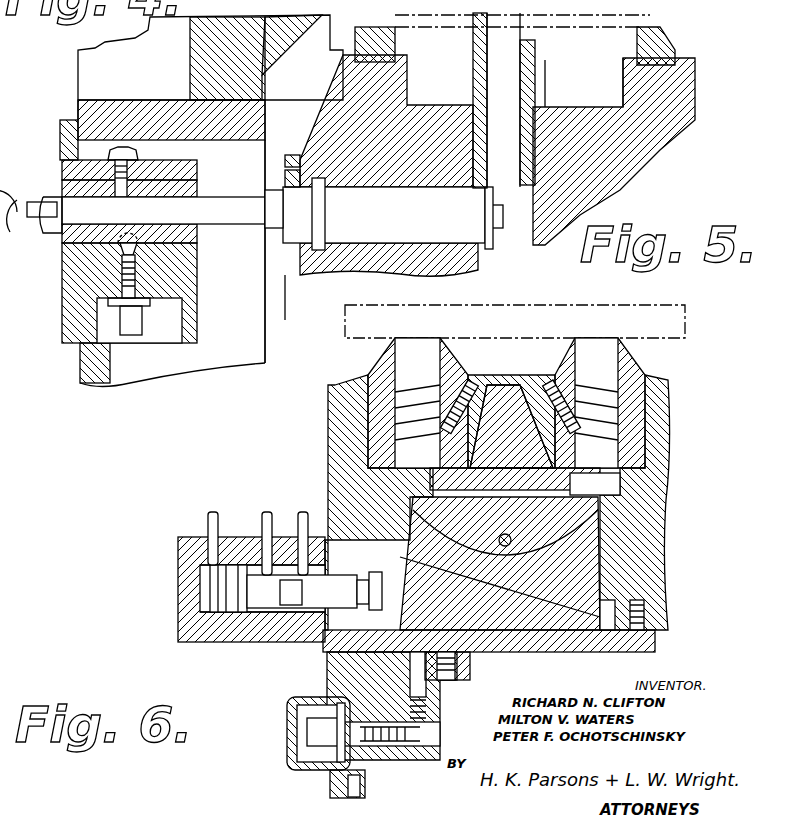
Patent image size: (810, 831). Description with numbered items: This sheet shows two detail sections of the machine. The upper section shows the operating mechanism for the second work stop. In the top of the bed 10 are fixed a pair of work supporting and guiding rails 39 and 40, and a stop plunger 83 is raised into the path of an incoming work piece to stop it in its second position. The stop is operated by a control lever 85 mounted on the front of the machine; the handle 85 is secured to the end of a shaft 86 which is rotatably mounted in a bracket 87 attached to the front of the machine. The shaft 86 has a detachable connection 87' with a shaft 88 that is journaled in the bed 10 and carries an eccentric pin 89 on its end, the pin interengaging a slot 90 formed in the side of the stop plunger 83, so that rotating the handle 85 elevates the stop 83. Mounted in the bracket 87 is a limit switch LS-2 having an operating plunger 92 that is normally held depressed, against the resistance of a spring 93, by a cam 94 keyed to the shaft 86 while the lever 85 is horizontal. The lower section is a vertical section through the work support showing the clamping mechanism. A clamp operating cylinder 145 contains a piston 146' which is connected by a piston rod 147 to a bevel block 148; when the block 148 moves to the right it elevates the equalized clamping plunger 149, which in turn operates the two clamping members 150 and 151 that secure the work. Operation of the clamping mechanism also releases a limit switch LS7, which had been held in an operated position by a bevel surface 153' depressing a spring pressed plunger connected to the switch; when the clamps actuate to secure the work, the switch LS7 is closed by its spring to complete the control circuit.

In FIG. 5, the bracket 87 is at (138, 232).
In FIG. 5, the control lever 85 is at (0, 195).
In FIG. 5, the cam 94 is at (120, 240).
In FIG. 5, the spring 93 is at (122, 275).
In FIG. 5, the operating plunger 92 is at (118, 303).
In FIG. 5, the shaft 86 is at (215, 226).
In FIG. 5, the detachable connection 87' is at (243, 251).
In FIG. 5, the shaft 88 is at (370, 235).
In FIG. 5, the bed 10 is at (410, 276).
In FIG. 5, the eccentric pin 89 is at (493, 220).
In FIG. 5, the slot 90 is at (505, 218).
In FIG. 5, the second stop 83 is at (540, 66).
In FIG. 5, the work supporting and guiding rail 40 is at (372, 28).
In FIG. 5, the work supporting and guiding rail 39 is at (678, 30).
In FIG. 5, the limit switch LS-2 is at (143, 325).
In FIG. 6, the clamping member 150 is at (402, 350).
In FIG. 6, the clamping member 151 is at (612, 357).
In FIG. 6, the equalized clamping plunger 149 is at (610, 527).
In FIG. 6, the clamp operating cylinder 145 is at (250, 565).
In FIG. 6, the piston rod 147 is at (313, 577).
In FIG. 6, the piston 146' is at (220, 589).
In FIG. 6, the bevel block 148 is at (510, 652).
In FIG. 6, the bevel surface 153' is at (456, 668).
In FIG. 6, the limit switch LS7 is at (310, 728).